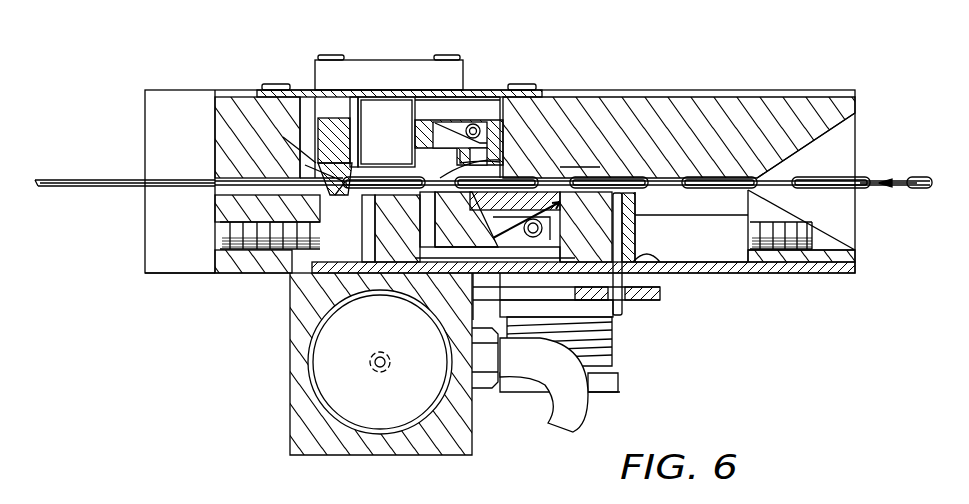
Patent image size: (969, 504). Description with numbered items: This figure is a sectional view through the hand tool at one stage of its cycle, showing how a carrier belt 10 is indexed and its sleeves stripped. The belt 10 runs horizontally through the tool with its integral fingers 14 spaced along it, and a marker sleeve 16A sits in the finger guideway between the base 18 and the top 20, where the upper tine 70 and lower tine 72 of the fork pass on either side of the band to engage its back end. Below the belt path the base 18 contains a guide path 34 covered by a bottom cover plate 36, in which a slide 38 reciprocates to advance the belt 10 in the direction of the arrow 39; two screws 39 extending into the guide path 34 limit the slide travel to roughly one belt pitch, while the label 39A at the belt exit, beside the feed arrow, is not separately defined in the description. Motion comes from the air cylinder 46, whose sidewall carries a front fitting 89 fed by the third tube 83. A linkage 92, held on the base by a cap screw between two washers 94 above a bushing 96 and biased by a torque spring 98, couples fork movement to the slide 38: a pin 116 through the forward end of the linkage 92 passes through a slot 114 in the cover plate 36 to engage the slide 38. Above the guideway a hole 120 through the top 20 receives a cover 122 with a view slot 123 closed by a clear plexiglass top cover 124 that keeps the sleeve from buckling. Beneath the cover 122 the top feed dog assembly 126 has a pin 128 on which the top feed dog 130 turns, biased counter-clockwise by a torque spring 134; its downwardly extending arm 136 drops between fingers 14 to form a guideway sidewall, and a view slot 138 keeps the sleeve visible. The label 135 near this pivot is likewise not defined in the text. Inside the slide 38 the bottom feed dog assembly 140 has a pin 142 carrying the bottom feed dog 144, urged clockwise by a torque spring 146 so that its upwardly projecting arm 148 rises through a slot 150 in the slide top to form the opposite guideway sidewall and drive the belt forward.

The carrier belt 10 is at (898, 197).
The integral fingers 14 is at (125, 186).
The marker sleeve 16A is at (490, 152).
The base 18 is at (139, 282).
The top 20 is at (196, 110).
The guide path 34 is at (757, 274).
The bottom cover plate 36 is at (775, 275).
The slide 38 is at (650, 278).
The screws 39 is at (230, 250).
The tape feed direction 39A is at (892, 182).
The air cylinder 46 is at (290, 392).
The upper tine 70 is at (288, 141).
The lower tine 72 is at (391, 228).
The third tube 83 is at (560, 415).
The front fitting 89 is at (488, 390).
The linkage 92 is at (630, 308).
The washers 94 is at (618, 327).
The bushing 96 is at (622, 390).
The torque spring 98 is at (620, 372).
The slot 114 is at (720, 280).
The pin 116 is at (645, 209).
The hole 120 is at (392, 125).
The cover 122 is at (250, 90).
The view slot 123 is at (400, 60).
The top cover 124 is at (458, 118).
The top feed dog assembly 126 is at (337, 118).
The pin 128 is at (478, 122).
The top feed dog 130 is at (306, 95).
The torque spring 134 is at (524, 84).
The pivot pin 135 is at (475, 124).
The downwardly extending arm 136 is at (320, 172).
The view slot 138 is at (355, 115).
The bottom feed dog assembly 140 is at (620, 168).
The pin 142 is at (548, 228).
The bottom feed dog 144 is at (380, 362).
The torque spring 146 is at (636, 244).
The upwardly projecting arm 148 is at (505, 158).
The slot 150 is at (570, 172).